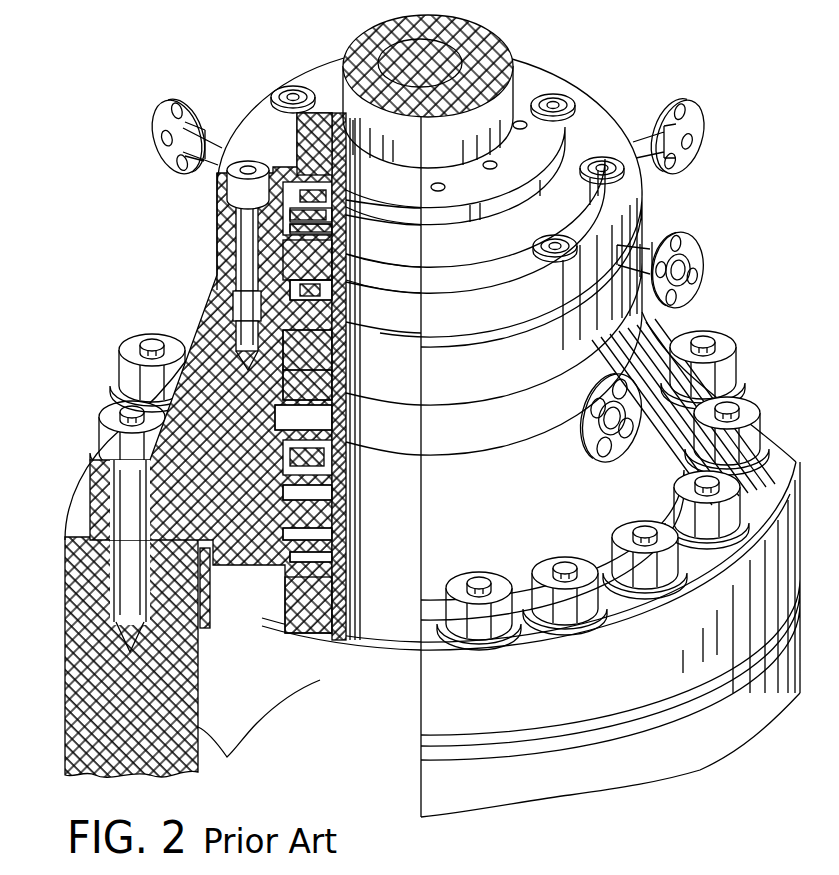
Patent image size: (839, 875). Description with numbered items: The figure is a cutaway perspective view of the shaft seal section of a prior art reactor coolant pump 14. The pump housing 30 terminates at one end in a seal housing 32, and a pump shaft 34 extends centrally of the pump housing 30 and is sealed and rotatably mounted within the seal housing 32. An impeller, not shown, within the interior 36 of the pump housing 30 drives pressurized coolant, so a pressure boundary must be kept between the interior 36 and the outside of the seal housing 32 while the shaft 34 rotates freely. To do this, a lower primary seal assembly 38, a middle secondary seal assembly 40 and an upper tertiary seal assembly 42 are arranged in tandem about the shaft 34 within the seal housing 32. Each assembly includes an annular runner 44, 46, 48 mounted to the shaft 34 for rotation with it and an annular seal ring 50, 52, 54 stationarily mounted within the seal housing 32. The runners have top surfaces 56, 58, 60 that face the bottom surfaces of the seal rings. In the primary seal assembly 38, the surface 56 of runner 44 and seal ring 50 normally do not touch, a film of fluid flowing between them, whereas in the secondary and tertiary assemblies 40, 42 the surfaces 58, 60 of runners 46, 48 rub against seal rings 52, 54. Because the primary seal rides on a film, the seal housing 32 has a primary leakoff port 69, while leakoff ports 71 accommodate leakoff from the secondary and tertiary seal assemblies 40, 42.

The reactor coolant pump 14 is at (735, 274).
The pump housing 30 is at (228, 757).
The seal housing 32 is at (217, 417).
The pump shaft 34 is at (462, 80).
The interior of the pump housing 36 is at (264, 667).
The lower primary seal assembly 38 is at (342, 571).
The middle secondary seal assembly 40 is at (342, 426).
The upper tertiary seal assembly 42 is at (343, 232).
The annular runner 44 is at (335, 597).
The annular runner 46 is at (335, 400).
The annular runner 48 is at (342, 253).
The annular seal ring 50 is at (335, 543).
The annular seal ring 52 is at (335, 337).
The annular seal ring 54 is at (338, 200).
The top surface of runner 56 is at (335, 560).
The top surface of runner 58 is at (335, 367).
The top surface of runner 60 is at (338, 216).
The primary leakoff port 69 is at (620, 403).
The leakoff ports 71 is at (703, 128).